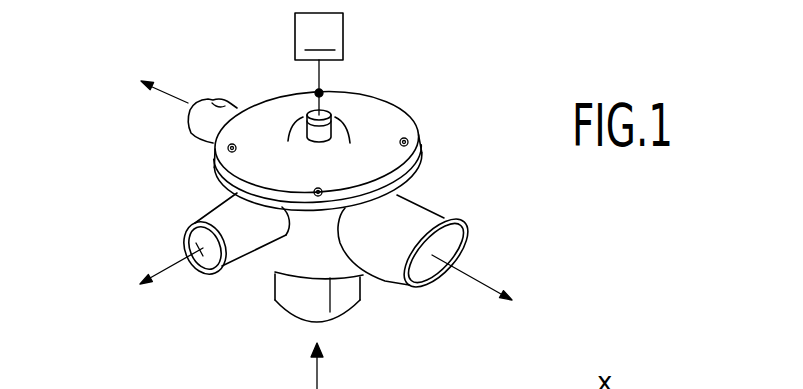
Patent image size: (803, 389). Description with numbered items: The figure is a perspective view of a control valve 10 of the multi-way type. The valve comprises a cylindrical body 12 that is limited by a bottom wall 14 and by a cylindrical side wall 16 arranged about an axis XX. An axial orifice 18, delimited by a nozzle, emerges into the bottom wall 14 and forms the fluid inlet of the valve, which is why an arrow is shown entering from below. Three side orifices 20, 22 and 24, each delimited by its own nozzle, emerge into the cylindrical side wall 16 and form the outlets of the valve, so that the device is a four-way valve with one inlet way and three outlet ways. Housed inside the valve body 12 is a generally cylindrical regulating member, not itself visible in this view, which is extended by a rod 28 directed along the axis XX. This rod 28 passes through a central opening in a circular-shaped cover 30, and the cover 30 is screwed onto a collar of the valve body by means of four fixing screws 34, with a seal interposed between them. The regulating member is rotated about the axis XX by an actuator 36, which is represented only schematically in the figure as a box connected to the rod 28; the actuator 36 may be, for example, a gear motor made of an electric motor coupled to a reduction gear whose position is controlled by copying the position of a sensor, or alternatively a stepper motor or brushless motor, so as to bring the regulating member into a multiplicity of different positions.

The control valve 10 is at (412, 84).
The cylindrical body 12 is at (245, 266).
The bottom wall 14 is at (347, 318).
The cylindrical side wall 16 is at (274, 260).
The axial orifice 18 is at (296, 313).
The side orifice 20 is at (411, 206).
The side orifice 22 is at (188, 234).
The side orifice 24 is at (208, 107).
The rod 28 is at (331, 113).
The cover 30 is at (394, 125).
The fixing screws 34 is at (316, 94).
The actuator 36 is at (319, 64).